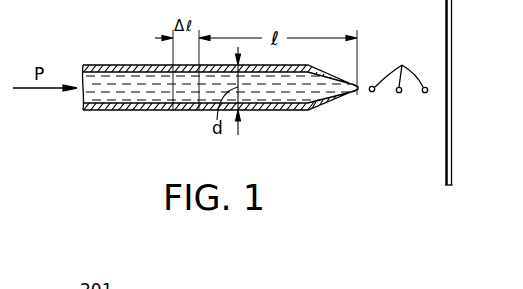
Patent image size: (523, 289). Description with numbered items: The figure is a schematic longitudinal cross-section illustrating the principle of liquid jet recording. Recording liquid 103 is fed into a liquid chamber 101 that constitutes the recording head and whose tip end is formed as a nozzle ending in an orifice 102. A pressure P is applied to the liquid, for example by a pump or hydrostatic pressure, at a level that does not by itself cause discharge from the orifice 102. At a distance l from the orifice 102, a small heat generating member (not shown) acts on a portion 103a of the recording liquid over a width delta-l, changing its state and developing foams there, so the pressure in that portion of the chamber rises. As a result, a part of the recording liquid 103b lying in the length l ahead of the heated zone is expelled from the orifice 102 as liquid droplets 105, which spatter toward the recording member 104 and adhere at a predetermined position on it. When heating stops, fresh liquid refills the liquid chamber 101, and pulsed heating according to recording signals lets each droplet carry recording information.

The liquid chamber 101 is at (264, 93).
The orifice 102 is at (358, 90).
The recording liquid 103 is at (128, 97).
The portion of the recording liquid adjacent the heat generating body 103a is at (179, 97).
The part of the recording liquid in the portion of width l 103b is at (307, 97).
The recording member 104 is at (452, 85).
The liquid droplets 105 is at (398, 68).